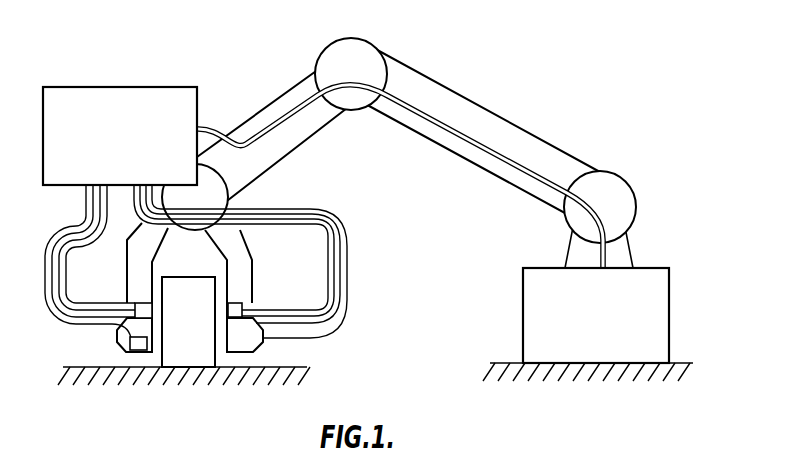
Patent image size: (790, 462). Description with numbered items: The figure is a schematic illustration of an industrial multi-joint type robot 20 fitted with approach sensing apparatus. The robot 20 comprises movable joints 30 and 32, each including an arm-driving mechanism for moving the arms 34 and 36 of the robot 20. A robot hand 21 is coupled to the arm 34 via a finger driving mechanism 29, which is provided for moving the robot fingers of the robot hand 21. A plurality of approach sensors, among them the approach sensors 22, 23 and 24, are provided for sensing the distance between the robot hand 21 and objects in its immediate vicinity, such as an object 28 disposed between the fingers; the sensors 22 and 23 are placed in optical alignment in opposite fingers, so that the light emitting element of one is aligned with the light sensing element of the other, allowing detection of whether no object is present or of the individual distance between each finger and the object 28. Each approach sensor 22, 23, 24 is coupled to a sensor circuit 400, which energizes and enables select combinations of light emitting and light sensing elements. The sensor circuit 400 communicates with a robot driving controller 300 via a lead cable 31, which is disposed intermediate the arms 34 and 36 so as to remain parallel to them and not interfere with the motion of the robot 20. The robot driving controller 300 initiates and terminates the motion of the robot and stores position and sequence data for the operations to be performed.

The sensor circuit 400 is at (131, 86).
The arm 34 is at (272, 97).
The movable joint 30 is at (386, 53).
The arm 36 is at (476, 108).
The lead cable 31 is at (512, 155).
The movable joint 32 is at (614, 171).
The robot 20 is at (367, 171).
The finger driving mechanism 29 is at (234, 194).
The robot hand 21 is at (264, 245).
The object 28 is at (195, 277).
The approach sensor 22 is at (243, 304).
The approach sensor 23 is at (141, 303).
The approach sensor 24 is at (127, 343).
The robot driving controller 300 is at (652, 267).